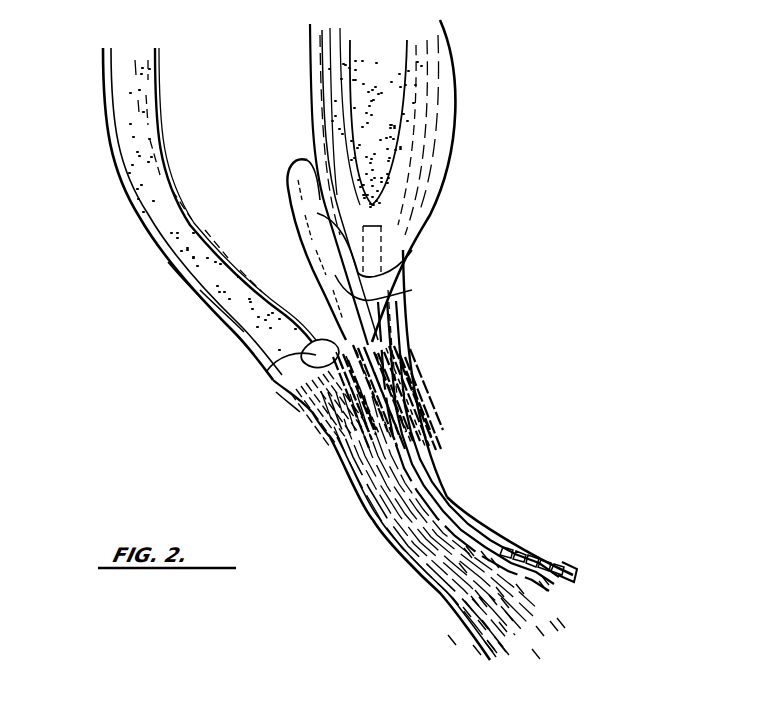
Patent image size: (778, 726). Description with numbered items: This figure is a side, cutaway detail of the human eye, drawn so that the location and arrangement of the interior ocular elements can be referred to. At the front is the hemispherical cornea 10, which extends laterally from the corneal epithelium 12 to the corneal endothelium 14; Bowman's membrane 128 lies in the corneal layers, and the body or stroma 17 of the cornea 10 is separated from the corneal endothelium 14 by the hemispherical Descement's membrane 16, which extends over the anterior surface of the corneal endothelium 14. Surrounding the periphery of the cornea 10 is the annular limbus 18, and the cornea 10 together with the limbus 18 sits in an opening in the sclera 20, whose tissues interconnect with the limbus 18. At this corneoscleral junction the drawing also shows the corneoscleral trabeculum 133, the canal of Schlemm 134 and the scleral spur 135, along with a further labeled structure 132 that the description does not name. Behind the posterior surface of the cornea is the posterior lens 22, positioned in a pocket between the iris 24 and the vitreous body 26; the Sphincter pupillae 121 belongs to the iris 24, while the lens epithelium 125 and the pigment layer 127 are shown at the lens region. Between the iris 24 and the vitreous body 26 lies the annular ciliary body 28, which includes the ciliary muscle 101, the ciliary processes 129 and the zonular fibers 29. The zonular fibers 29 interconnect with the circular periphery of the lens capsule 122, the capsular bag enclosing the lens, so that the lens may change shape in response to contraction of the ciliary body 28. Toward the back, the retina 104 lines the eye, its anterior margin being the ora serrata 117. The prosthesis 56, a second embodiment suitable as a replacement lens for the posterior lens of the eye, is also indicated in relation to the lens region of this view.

The cornea 10 is at (125, 118).
The corneal epithelium 12 is at (110, 165).
The corneal endothelium 14 is at (160, 63).
The Descement's membrane 16 is at (148, 98).
The stroma 17 is at (223, 290).
The limbus 18 is at (296, 353).
The sclera 20 is at (407, 510).
The posterior lens 22 is at (426, 133).
The iris 24 is at (312, 270).
The vitreous body 26 is at (502, 188).
The ciliary body 28 is at (406, 380).
The zonular fibers 29 is at (405, 312).
The prosthesis 56 is at (458, 78).
The ciliary muscle 101 is at (420, 430).
The retina 104 is at (575, 550).
The ora serrata 117 is at (527, 543).
The Sphincter pupillae 121 is at (296, 194).
The lens capsule 122 is at (445, 199).
The lens epithelium 125 is at (412, 251).
The pigment layer 127 is at (390, 294).
The Bowman's membrane 128 is at (178, 280).
The ciliary processes 129 is at (410, 332).
The fold line 132 is at (280, 375).
The corneoscleral trabeculum 133 is at (277, 397).
The canal of Schlemm 134 is at (313, 430).
The scleral spur 135 is at (363, 497).